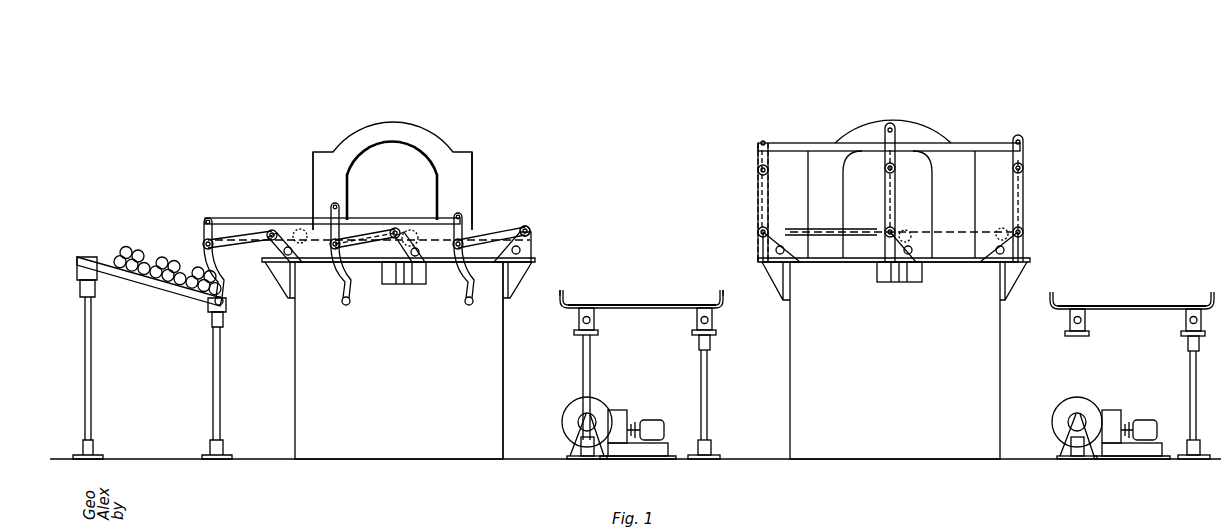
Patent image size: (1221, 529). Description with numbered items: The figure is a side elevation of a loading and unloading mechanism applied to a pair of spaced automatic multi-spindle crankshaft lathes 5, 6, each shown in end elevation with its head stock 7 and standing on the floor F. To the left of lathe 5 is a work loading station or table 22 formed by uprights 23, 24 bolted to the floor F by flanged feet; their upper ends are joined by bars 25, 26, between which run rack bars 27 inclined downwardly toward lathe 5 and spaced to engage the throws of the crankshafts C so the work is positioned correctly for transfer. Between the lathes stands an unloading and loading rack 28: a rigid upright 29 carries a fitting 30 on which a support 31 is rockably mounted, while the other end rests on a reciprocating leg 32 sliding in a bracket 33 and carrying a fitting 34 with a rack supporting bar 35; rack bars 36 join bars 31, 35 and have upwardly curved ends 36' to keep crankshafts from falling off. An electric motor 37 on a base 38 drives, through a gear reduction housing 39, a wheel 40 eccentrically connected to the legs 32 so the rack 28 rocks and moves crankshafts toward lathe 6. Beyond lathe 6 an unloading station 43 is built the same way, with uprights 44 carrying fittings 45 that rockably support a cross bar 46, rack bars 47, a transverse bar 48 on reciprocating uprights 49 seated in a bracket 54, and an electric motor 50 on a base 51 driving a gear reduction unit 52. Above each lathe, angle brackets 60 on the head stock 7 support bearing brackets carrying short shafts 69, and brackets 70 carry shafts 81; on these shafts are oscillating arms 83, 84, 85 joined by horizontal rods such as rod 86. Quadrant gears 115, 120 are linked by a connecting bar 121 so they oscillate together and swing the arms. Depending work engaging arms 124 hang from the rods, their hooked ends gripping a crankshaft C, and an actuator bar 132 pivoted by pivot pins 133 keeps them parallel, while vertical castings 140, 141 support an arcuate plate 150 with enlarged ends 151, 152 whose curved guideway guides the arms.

The multi-spindle lathe 5 is at (504, 356).
The multi-spindle lathe 6 is at (1000, 410).
The head stock 7 is at (300, 368).
The work loading station or table 22 is at (154, 280).
The upright 23 is at (92, 380).
The upright 24 is at (213, 380).
The bar 25 is at (98, 282).
The bar 26 is at (226, 305).
The rack bar 27 is at (84, 257).
The unloading and loading rack 28 is at (632, 300).
The rigid upright 29 is at (701, 362).
The fitting 30 is at (711, 342).
The support 31 is at (715, 318).
The reciprocating leg 32 is at (592, 368).
The bracket 33 is at (576, 452).
The fitting 34 is at (598, 333).
The rack supporting bar 35 is at (582, 318).
The rack bar 36 is at (642, 278).
The upwardly curved end 36' is at (647, 263).
The electric motor 37 is at (652, 423).
The base 38 is at (620, 452).
The gear reduction housing 39 is at (618, 410).
The wheel 40 is at (570, 410).
The unloading station 43 is at (1118, 300).
The upright 44 is at (1190, 375).
The fitting 45 is at (1188, 344).
The cross bar 46 is at (1186, 322).
The rack bar 47 is at (1165, 300).
The transverse bar 48 is at (1068, 320).
The reciprocating upright 49 is at (1083, 370).
The electric motor 50 is at (1146, 425).
The base 51 is at (1145, 452).
The gear reduction unit 52 is at (1112, 410).
The bracket 54 is at (1072, 452).
The angle bracket 60 is at (290, 300).
The short shaft 69 is at (530, 228).
The bracket 70 is at (405, 285).
The shaft 81 is at (896, 232).
The oscillating arm 83 is at (246, 242).
The oscillating arm 84 is at (372, 224).
The oscillating arm 85 is at (492, 222).
The horizontal rod 86 is at (1023, 165).
The quadrant gear 115 is at (415, 225).
The quadrant gear 120 is at (277, 232).
The connecting bar 121 is at (308, 225).
The work engaging arm 124 is at (204, 248).
The actuator bar 132 is at (297, 232).
The pivot pin 133 is at (765, 140).
The vertical casting 140 is at (343, 196).
The vertical casting 141 is at (478, 188).
The arcuate plate 150 is at (395, 120).
The enlarged end 151 is at (313, 152).
The enlarged end 152 is at (472, 150).
The crankshaft C is at (148, 258).
The floor F is at (272, 460).